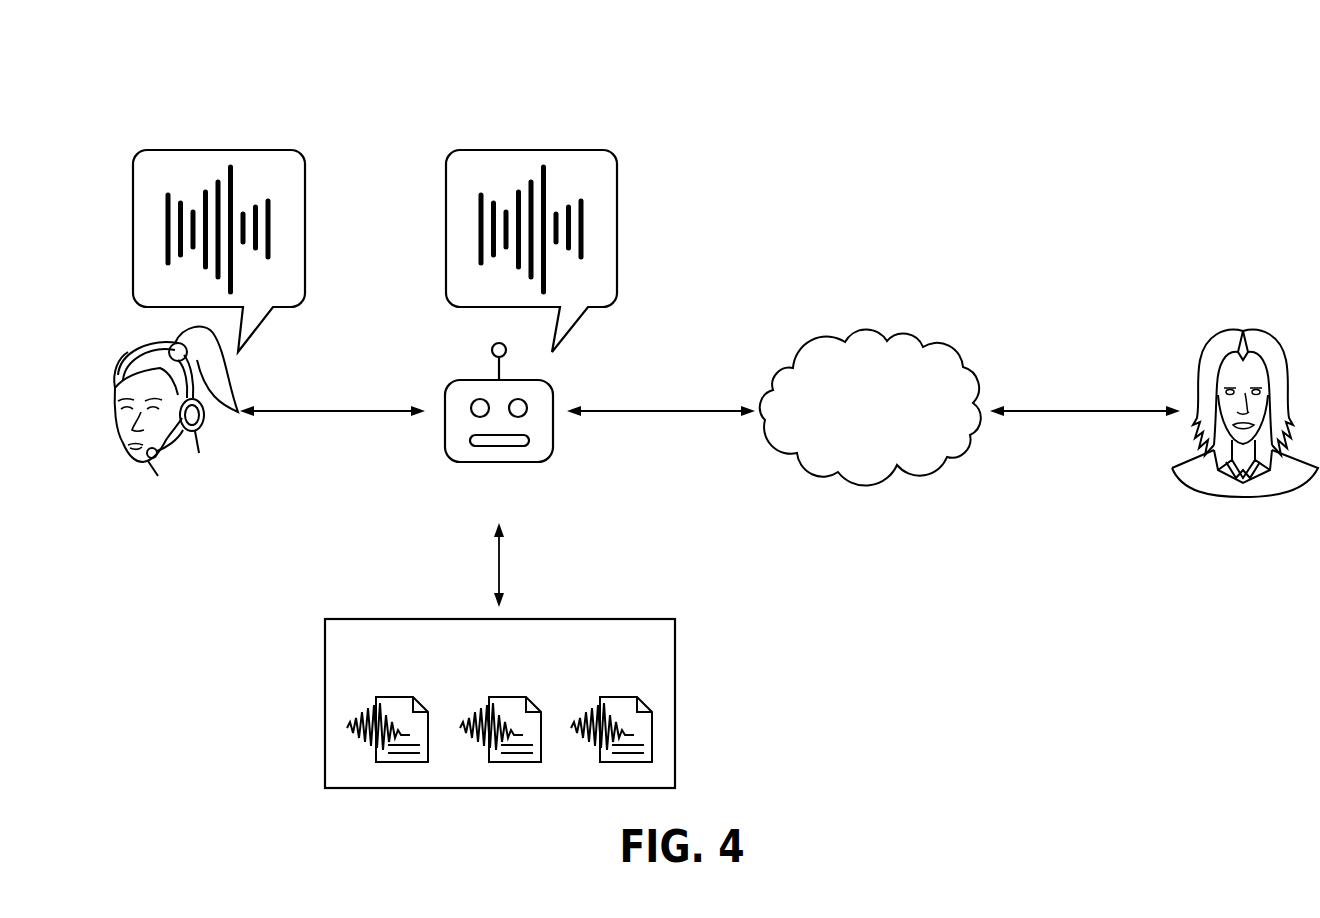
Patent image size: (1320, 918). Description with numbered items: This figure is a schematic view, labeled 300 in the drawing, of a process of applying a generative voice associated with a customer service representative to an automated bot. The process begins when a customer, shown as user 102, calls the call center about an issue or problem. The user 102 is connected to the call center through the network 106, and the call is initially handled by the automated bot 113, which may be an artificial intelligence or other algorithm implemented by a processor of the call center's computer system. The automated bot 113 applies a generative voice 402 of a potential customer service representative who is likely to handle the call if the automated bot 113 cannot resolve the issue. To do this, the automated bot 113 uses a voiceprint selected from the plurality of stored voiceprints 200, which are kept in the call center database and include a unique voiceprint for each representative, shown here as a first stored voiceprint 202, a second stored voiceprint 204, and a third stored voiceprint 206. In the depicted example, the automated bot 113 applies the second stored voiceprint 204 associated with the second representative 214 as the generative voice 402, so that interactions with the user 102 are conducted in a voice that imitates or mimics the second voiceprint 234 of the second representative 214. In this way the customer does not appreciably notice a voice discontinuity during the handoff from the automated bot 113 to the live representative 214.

The system 300 is at (852, 92).
The second voiceprint 234 is at (212, 150).
The generative voice 402 is at (530, 150).
The second representative 214 is at (127, 358).
The automated bot 113 is at (452, 381).
The network 106 is at (866, 490).
The user 102 is at (1220, 330).
The stored voiceprints 200 is at (325, 710).
The first stored voiceprint 202 is at (652, 740).
The second stored voiceprint 204 is at (517, 762).
The third stored voiceprint 206 is at (402, 762).